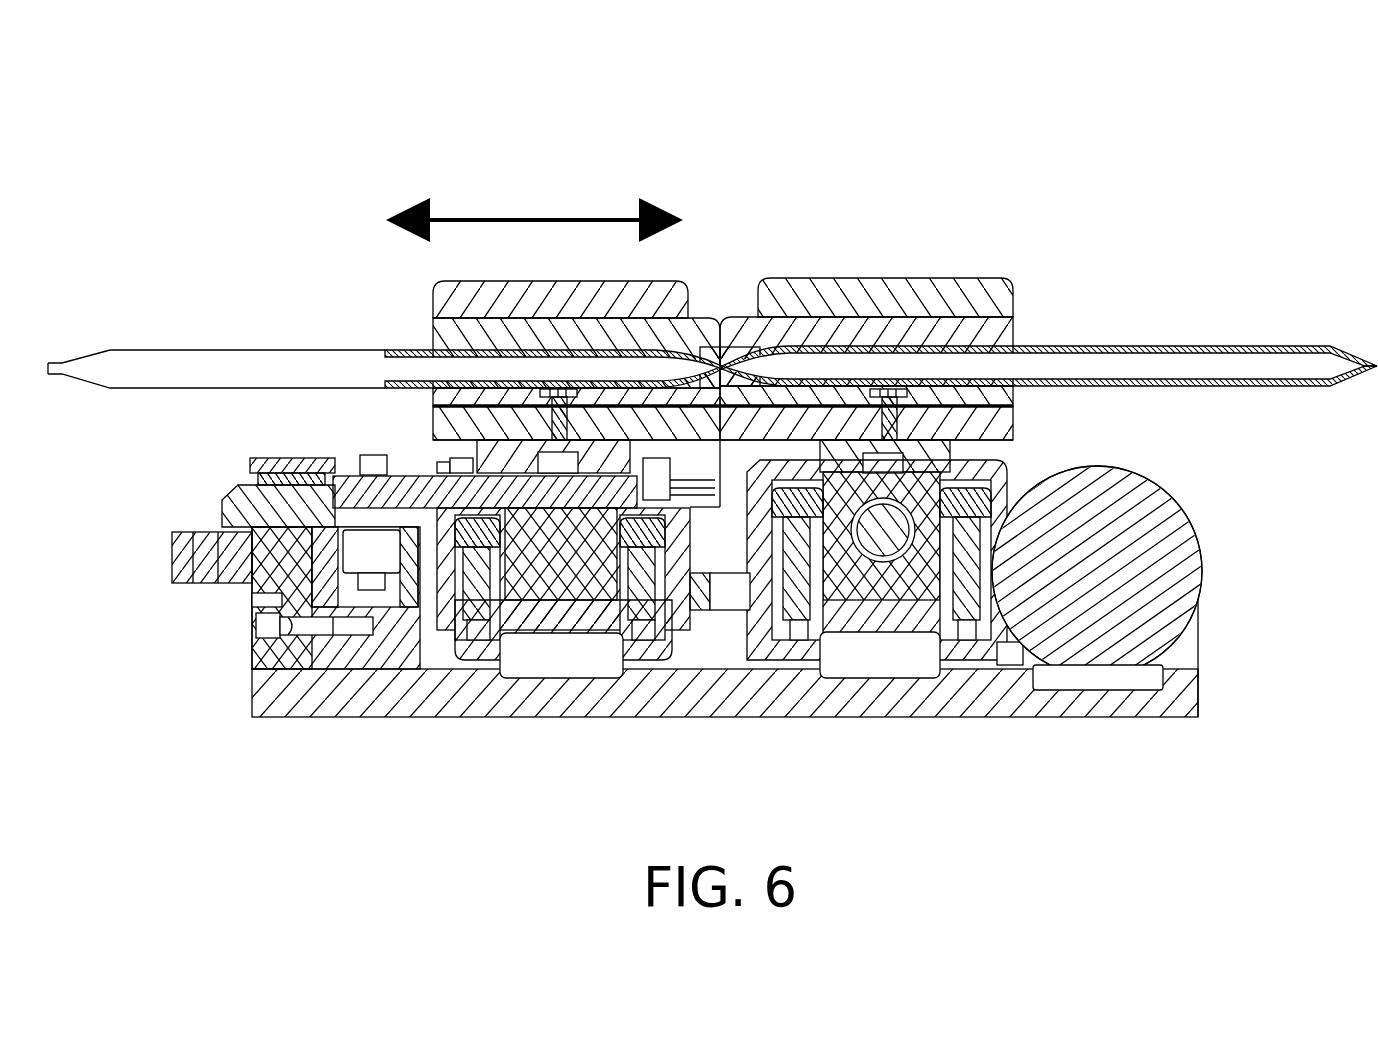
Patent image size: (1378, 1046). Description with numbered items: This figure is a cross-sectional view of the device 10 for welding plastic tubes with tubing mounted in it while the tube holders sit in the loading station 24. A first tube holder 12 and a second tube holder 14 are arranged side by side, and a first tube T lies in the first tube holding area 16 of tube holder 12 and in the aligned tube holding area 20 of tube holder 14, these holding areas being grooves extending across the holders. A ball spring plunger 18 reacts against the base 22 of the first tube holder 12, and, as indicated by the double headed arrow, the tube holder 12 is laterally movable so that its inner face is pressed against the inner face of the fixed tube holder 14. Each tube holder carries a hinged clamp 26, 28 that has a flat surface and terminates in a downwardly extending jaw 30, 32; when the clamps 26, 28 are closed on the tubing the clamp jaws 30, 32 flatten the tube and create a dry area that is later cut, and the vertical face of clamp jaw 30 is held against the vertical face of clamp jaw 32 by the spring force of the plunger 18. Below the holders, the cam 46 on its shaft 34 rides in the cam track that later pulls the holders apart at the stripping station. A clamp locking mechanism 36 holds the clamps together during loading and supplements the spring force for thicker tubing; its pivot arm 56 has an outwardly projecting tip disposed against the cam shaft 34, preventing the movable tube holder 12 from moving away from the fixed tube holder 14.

The device 10 is at (1163, 204).
The first tube holder 12 is at (690, 280).
The second tube holder 14 is at (1017, 284).
The first tube holding area 16 is at (433, 388).
The ball spring plunger 18 is at (254, 510).
The first tube holding area 20 is at (1013, 392).
The base 22 is at (329, 493).
The loading station 24 is at (710, 527).
The hinged clamp 26 is at (442, 332).
The hinged clamp 28 is at (1013, 330).
The clamp jaw 30 is at (701, 362).
The clamp jaw 32 is at (715, 362).
The cam shaft 34 is at (364, 444).
The clamp locking mechanism 36 is at (320, 448).
The cam 46 is at (373, 560).
The pivot arm 56 is at (287, 464).
The tube T is at (1287, 348).